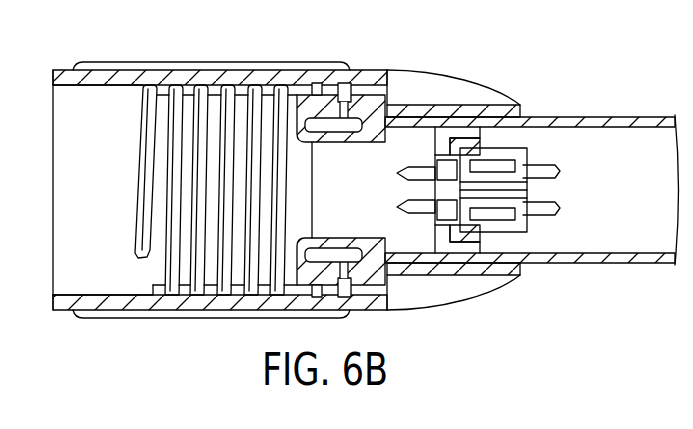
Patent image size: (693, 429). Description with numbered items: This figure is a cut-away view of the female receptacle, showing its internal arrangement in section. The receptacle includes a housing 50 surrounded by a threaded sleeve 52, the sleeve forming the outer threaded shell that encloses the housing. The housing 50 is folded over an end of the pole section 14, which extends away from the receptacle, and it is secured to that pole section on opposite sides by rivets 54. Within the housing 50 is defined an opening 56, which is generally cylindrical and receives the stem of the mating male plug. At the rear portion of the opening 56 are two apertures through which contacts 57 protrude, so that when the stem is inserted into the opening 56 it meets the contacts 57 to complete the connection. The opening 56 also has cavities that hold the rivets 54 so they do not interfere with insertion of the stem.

The pole section 14 is at (628, 116).
The housing 50 is at (318, 136).
The threaded sleeve 52 is at (273, 62).
The rivet 54 is at (386, 283).
The opening 56 is at (344, 227).
The contact 57 is at (397, 207).